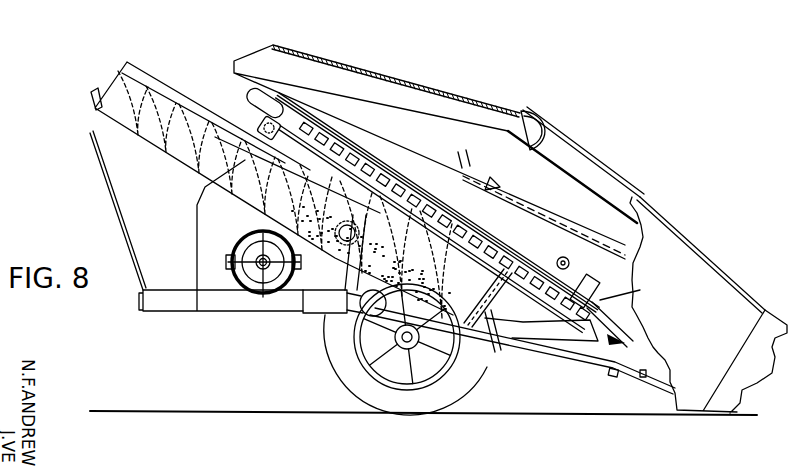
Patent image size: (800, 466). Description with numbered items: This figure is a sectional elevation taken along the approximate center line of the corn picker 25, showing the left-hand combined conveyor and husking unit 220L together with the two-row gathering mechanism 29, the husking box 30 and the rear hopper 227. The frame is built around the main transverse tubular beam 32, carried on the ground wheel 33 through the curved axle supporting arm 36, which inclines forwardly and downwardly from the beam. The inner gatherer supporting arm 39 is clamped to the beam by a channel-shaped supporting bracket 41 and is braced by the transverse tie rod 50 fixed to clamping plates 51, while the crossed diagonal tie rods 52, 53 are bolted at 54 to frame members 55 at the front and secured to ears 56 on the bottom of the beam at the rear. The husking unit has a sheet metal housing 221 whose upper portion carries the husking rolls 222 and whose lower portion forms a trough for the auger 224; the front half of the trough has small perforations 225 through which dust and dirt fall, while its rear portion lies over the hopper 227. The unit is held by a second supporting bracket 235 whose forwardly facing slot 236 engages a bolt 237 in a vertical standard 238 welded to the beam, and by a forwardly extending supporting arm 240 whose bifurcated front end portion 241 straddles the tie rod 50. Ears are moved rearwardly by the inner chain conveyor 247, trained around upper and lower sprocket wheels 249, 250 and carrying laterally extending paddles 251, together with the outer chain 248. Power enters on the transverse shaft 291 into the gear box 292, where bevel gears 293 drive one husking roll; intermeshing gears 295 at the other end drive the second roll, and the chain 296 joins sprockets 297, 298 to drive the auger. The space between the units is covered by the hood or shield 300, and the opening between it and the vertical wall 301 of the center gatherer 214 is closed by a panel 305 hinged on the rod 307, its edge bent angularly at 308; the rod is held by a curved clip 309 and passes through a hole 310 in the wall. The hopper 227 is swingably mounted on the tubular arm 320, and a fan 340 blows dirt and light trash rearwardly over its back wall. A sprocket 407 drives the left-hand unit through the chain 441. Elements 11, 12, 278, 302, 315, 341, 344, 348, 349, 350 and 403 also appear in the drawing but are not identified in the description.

The section line 11 is at (557, 198).
The direction arrow 12 is at (290, 331).
The corn picker 25 is at (660, 192).
The two-row gathering mechanism 29 is at (745, 280).
The husking box 30 is at (394, 102).
The main transverse tubular supporting beam 32 is at (350, 314).
The ground engaging wheel 33 is at (419, 410).
The curved axle supporting arm 36 is at (403, 372).
The gatherer supporting arm 39 is at (580, 358).
The supporting bracket 41 is at (413, 337).
The transverse tie rod 50 is at (625, 338).
The clamping plate 51 is at (640, 347).
The diagonal tie rod 52 is at (457, 347).
The diagonal tie rod 53 is at (548, 352).
The bolt 54 is at (645, 373).
The frame member 55 is at (650, 377).
The ear 56 is at (371, 317).
The center gatherer 214 is at (703, 253).
The left-hand combined conveyor and husking unit 220L is at (640, 290).
The sheet metal housing 221 is at (219, 140).
The husking roll 222 is at (207, 190).
The auger 224 is at (272, 188).
The perforations 225 is at (333, 320).
The hopper 227 is at (117, 218).
The second supporting bracket 235 is at (385, 198).
The forwardly facing slot 236 is at (302, 205).
The bolt 237 is at (345, 222).
The vertical standard 238 is at (402, 262).
The forwardly extending supporting arm 240 is at (623, 315).
The bifurcated front end portion 241 is at (616, 372).
The inner endless chain conveyor 247 is at (443, 225).
The outer chain conveyor 248 is at (540, 328).
The upper sprocket wheel 249 is at (281, 143).
The lower sprocket wheel 250 is at (590, 290).
The laterally extending paddles 251 is at (490, 250).
The chain guide 278 is at (432, 182).
The transverse shaft 291 is at (249, 105).
The gear box 292 is at (196, 171).
The intermeshing bevel gears 293 is at (279, 88).
The intermeshing gears 295 is at (520, 263).
The power transmitting chain 296 is at (496, 335).
The sprocket 297 is at (487, 322).
The sprocket 298 is at (488, 357).
The sheet metal hood or shield 300 is at (437, 162).
The vertical wall 301 is at (632, 197).
The deck plate 302 is at (368, 190).
The panel or door 305 is at (522, 212).
The hinge rod 307 is at (640, 246).
The angularly bent edges 308 is at (488, 186).
The curved clip 309 is at (460, 172).
The hole 310 is at (668, 218).
The pin 315 is at (569, 264).
The tubular arm 320 is at (213, 302).
The fan 340 is at (220, 247).
The sprocket bracket 341 is at (240, 286).
The frame bar 344 is at (214, 305).
The sprocket hub 348 is at (236, 253).
The frame bar 349 is at (263, 303).
The drive sprocket 350 is at (240, 215).
The auger shaft 403 is at (352, 243).
The sprocket 407 is at (348, 233).
The chain 441 is at (327, 313).